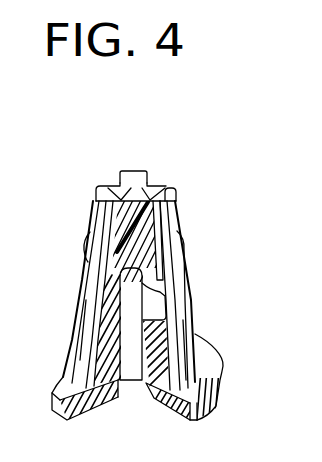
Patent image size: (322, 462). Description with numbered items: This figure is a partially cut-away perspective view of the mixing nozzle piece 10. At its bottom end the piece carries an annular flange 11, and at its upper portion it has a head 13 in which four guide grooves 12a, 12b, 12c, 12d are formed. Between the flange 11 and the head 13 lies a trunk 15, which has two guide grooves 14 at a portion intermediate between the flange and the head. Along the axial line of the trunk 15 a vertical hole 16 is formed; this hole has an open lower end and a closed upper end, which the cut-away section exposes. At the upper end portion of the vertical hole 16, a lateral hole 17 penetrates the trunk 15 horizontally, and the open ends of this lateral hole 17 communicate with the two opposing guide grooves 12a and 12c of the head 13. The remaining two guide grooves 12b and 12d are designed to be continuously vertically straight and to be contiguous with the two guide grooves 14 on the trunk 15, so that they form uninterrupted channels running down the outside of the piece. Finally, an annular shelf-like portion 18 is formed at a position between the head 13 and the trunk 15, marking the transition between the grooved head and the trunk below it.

The mixing nozzle piece 10 is at (188, 217).
The annular flange 11 is at (212, 368).
The guide groove 12a is at (164, 186).
The guide groove 12b is at (146, 171).
The guide groove 12c is at (100, 186).
The guide groove 12d is at (94, 219).
The head 13 is at (171, 193).
The guide groove 14 is at (91, 300).
The trunk 15 is at (192, 323).
The vertical hole 16 is at (131, 380).
The lateral hole 17 is at (160, 297).
The annular shelf-like portion 18 is at (88, 243).